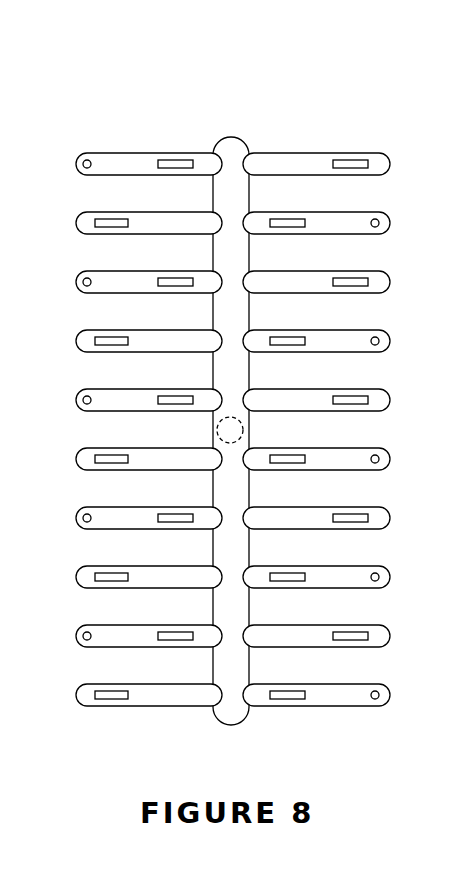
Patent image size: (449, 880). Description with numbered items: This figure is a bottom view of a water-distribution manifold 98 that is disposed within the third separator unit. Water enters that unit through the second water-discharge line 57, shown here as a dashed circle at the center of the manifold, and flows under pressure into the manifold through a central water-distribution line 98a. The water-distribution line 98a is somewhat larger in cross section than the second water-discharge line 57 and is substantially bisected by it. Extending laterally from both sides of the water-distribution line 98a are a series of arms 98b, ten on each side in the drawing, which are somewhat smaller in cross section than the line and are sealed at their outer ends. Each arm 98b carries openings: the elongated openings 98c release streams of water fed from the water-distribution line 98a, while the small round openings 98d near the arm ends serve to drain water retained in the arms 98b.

The water-distribution manifold 98 is at (233, 385).
The water-distribution line 98a is at (232, 136).
The laterally-extending arms 98b is at (338, 272).
The openings 98c is at (348, 398).
The openings 98d is at (376, 573).
The second water-discharge line 57 is at (243, 430).